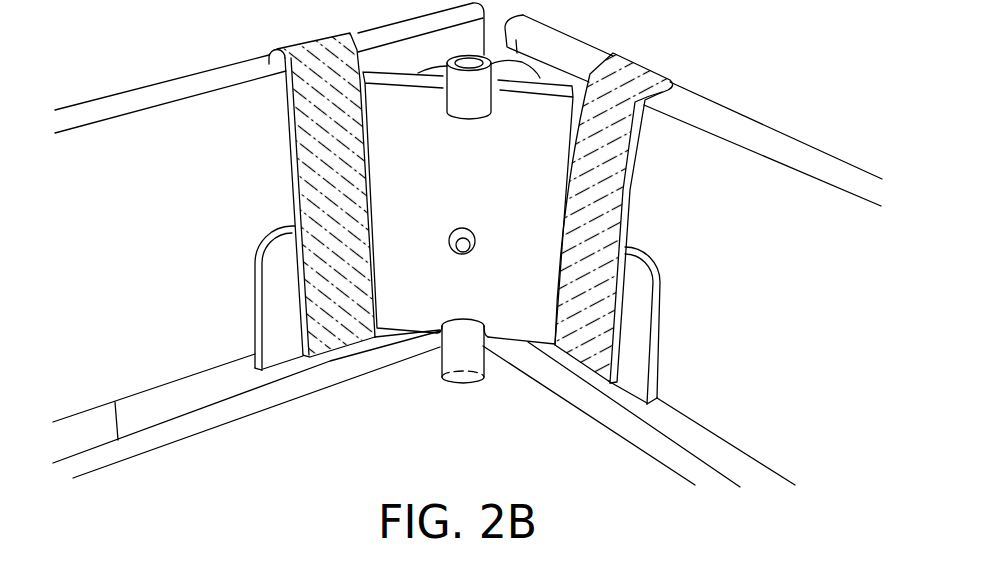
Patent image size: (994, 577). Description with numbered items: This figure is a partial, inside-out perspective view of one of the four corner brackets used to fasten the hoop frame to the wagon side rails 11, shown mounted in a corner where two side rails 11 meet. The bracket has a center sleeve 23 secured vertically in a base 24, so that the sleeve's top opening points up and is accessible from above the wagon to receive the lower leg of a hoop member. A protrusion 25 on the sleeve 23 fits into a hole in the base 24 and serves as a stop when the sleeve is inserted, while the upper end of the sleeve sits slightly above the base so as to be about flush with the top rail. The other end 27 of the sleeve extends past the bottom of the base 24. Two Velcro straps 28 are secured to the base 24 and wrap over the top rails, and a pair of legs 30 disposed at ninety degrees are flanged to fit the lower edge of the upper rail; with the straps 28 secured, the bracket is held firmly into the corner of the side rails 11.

The side rails 11 is at (125, 227).
The center sleeve 23 is at (455, 97).
The base 24 is at (534, 308).
The protrusion 25 is at (467, 247).
The other end of the sleeve 27 is at (476, 368).
The Velcro straps 28 is at (311, 144).
The legs 30 is at (272, 308).